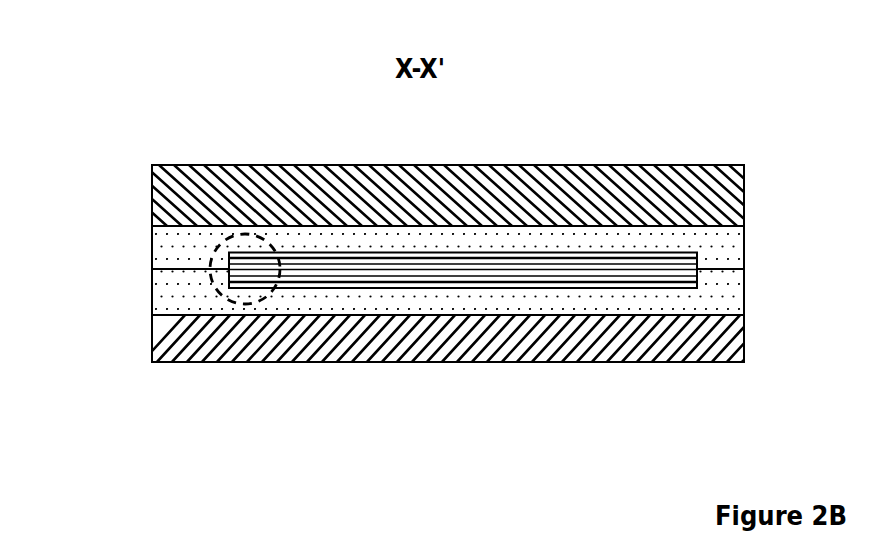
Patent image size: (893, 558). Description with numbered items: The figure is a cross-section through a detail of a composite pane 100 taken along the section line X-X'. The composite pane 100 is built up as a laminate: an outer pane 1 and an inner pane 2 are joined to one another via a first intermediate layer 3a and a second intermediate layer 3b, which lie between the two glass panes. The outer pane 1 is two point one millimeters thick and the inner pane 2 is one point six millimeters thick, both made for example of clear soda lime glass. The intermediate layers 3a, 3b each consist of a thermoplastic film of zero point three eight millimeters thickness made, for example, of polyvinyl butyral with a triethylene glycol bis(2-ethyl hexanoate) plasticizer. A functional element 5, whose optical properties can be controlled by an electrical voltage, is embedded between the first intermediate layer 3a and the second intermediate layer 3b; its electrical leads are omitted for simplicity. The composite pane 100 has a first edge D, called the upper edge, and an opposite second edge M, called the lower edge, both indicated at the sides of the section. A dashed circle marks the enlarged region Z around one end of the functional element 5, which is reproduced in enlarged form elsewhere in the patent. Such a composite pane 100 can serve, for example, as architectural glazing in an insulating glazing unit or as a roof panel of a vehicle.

The composite pane 100 is at (198, 100).
The outer pane 1 is at (164, 165).
The inner pane 2 is at (230, 362).
The first intermediate layer 3a is at (721, 244).
The second intermediate layer 3b is at (730, 302).
The functional element 5 is at (515, 270).
The enlarged region Z is at (262, 301).
The lower edge M is at (148, 182).
The upper edge D is at (748, 185).